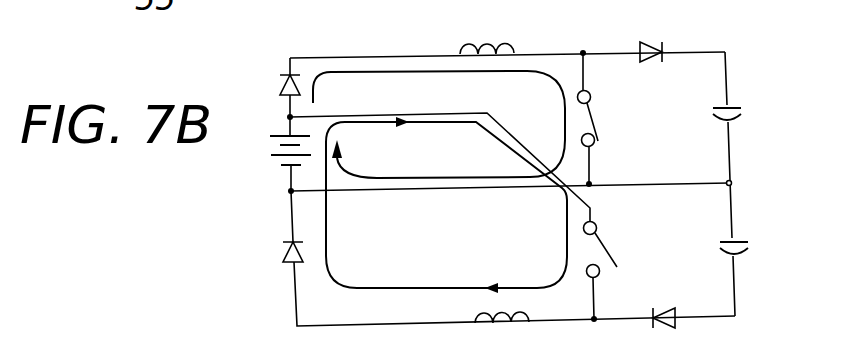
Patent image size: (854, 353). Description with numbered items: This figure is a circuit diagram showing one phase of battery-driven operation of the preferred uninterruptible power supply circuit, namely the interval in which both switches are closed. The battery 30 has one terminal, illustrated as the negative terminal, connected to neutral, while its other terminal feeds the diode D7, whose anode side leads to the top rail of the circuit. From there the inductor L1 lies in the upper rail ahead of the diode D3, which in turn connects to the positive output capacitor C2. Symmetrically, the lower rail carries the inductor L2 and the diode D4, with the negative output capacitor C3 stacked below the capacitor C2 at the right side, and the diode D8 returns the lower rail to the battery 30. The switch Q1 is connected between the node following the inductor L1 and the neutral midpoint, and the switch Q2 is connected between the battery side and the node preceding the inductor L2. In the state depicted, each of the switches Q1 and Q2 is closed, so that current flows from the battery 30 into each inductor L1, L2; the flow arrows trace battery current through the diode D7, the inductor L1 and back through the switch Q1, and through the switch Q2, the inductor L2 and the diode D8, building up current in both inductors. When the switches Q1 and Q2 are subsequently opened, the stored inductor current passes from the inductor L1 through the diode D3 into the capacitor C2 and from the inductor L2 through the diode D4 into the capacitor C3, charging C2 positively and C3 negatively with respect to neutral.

The diode D7 is at (271, 88).
The diode D8 is at (275, 254).
The diode D3 is at (652, 39).
The diode D4 is at (682, 328).
The inductor L1 is at (487, 34).
The inductor L2 is at (502, 332).
The switch Q1 is at (605, 118).
The switch Q2 is at (614, 271).
The capacitor C2 is at (745, 117).
The capacitor C3 is at (751, 249).
The battery 30 is at (273, 145).